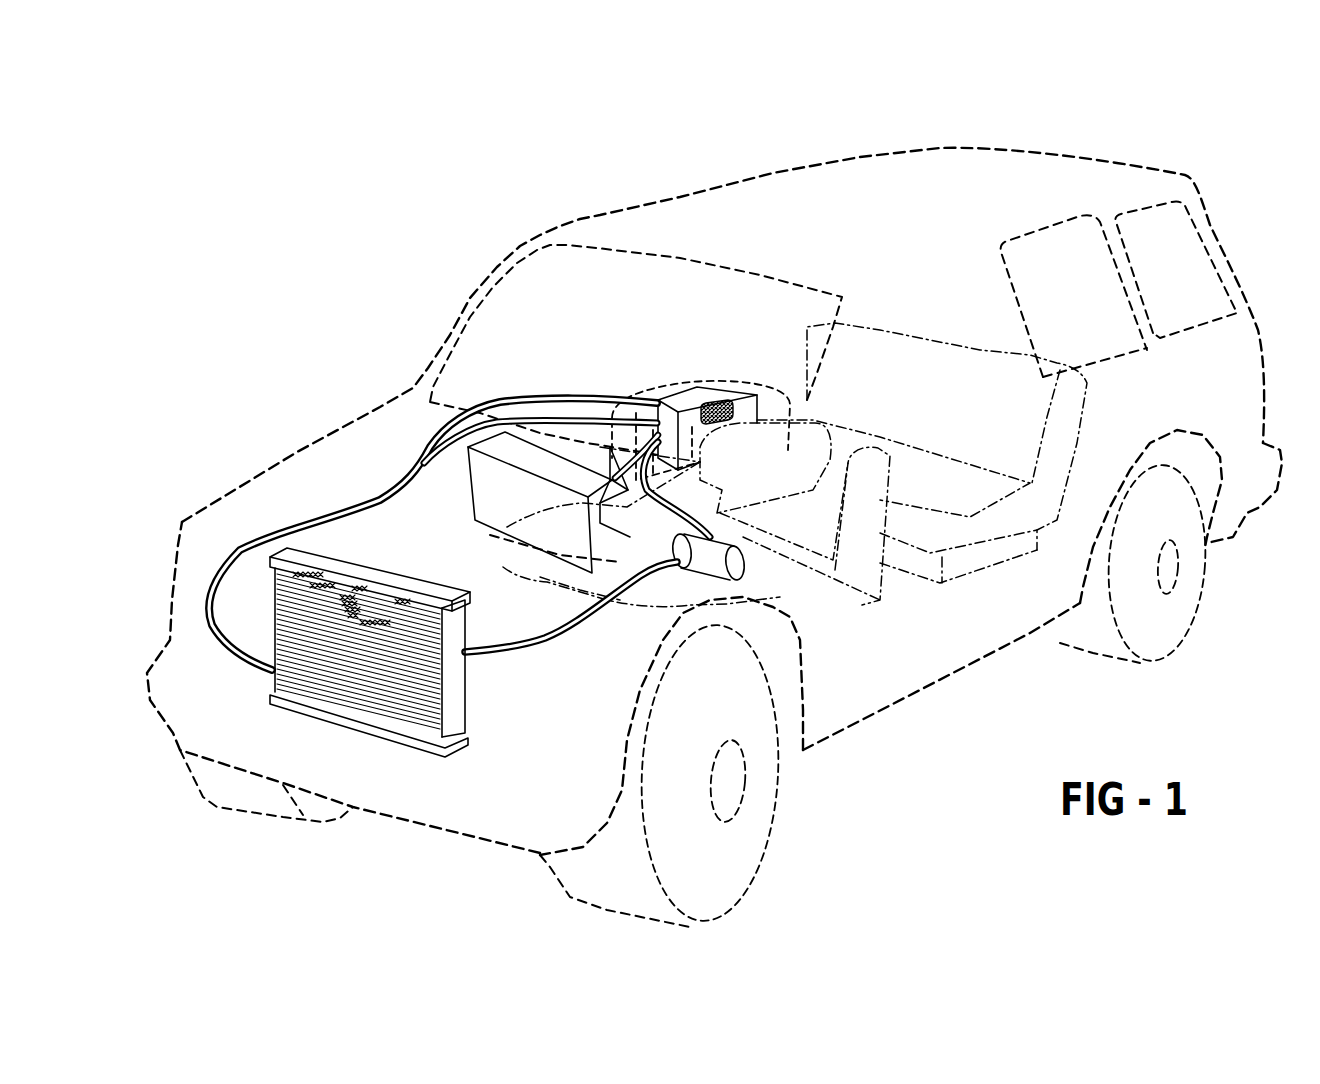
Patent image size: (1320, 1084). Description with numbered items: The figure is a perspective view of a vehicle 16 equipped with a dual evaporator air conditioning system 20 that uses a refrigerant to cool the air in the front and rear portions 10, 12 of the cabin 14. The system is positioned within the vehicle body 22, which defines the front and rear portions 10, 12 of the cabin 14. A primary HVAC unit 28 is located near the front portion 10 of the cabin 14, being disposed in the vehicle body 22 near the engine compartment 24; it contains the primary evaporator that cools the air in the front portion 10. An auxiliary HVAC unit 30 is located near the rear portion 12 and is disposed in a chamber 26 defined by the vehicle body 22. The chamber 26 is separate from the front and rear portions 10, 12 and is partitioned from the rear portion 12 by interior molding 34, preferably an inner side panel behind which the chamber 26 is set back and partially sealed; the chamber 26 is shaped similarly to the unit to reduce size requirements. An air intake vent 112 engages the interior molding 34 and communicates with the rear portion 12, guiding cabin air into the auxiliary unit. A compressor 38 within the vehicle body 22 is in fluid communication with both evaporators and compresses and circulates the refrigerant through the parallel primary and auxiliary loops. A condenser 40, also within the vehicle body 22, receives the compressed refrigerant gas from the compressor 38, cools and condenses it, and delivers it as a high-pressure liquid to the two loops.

The front portion 10 is at (750, 527).
The rear portion 12 is at (968, 415).
The cabin 14 is at (995, 617).
The vehicle 16 is at (687, 140).
The dual evaporator air conditioning system 20 is at (280, 512).
The vehicle body 22 is at (1032, 635).
The engine compartment 24 is at (500, 664).
The chamber 26 is at (767, 400).
The primary HVAC unit 28 is at (473, 503).
The auxiliary HVAC unit 30 is at (703, 385).
The interior molding 34 is at (737, 387).
The compressor 38 is at (735, 560).
The condenser 40 is at (458, 705).
The air intake vent 112 is at (705, 398).